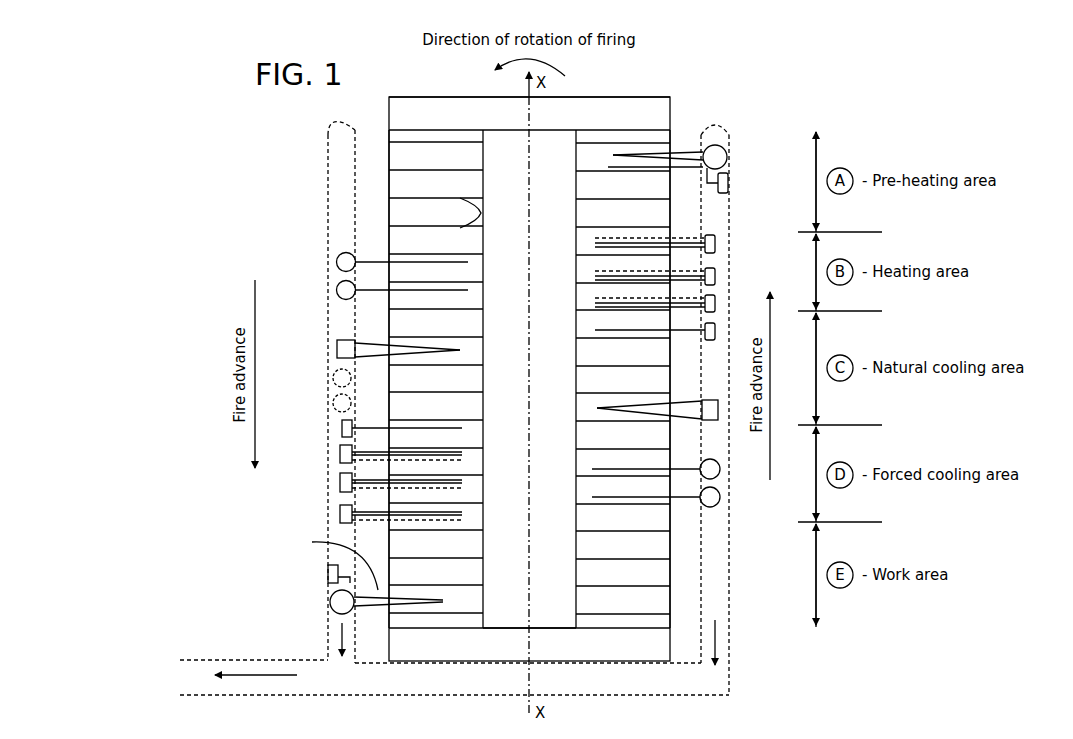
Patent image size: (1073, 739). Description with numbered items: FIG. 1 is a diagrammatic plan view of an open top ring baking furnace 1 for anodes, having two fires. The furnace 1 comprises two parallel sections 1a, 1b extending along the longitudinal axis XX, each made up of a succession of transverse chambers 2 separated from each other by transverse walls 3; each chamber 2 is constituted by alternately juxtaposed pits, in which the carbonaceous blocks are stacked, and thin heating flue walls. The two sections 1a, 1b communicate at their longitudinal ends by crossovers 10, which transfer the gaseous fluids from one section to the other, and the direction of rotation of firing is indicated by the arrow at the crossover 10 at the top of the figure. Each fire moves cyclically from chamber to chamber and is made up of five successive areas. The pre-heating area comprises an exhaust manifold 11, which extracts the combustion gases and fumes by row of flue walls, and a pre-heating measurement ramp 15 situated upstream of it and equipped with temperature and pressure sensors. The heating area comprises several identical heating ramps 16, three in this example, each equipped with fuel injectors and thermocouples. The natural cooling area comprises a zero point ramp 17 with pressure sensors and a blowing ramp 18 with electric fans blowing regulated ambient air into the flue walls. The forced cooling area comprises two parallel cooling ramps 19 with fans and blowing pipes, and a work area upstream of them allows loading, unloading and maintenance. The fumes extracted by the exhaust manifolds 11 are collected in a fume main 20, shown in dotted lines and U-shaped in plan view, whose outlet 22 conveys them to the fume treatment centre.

The baking furnace 1 is at (680, 91).
The first section 1a is at (416, 128).
The second section 1b is at (645, 128).
The transverse chambers 2 is at (413, 187).
The transverse walls 3 is at (481, 213).
The crossovers 10 is at (608, 112).
The exhaust manifold 11 is at (443, 600).
The pre-heating measurement ramp 15 is at (332, 562).
The heating ramps 16 is at (342, 512).
The zero point ramp 17 is at (342, 428).
The blowing ramp 18 is at (337, 348).
The cooling ramps 19 is at (338, 286).
The fume main 20 is at (333, 218).
The outlet 22 is at (270, 663).